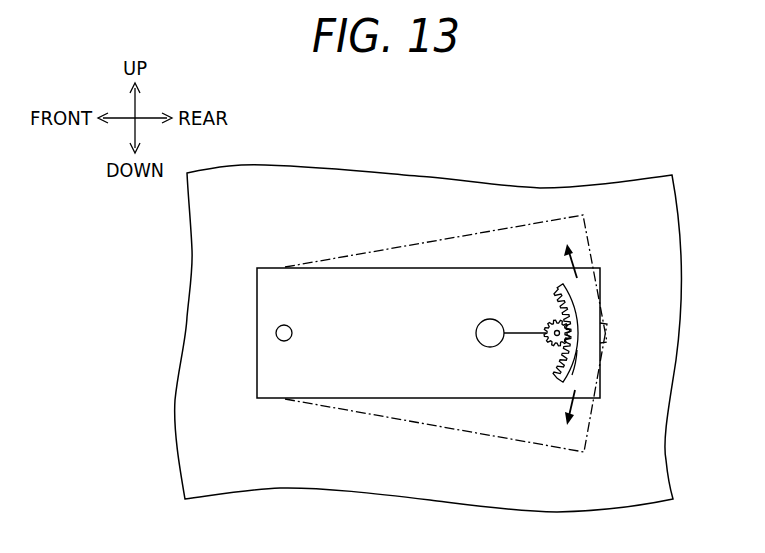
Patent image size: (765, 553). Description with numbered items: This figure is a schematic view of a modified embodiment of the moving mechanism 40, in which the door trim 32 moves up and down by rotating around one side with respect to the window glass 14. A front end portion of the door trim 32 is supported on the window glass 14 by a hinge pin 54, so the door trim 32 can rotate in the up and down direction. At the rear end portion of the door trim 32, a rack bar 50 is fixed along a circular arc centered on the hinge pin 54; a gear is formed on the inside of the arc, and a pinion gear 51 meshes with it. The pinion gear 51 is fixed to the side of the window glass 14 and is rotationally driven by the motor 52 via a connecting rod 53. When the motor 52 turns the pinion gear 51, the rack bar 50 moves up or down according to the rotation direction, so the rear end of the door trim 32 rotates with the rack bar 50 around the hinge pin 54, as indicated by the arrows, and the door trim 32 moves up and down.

The window glass 14 is at (520, 203).
The door trim 32 is at (330, 268).
The moving mechanism 40 is at (583, 295).
The rack bar 50 is at (575, 362).
The pinion gear 51 is at (553, 345).
The motor 52 is at (477, 328).
The connecting rod 53 is at (527, 333).
The hinge pin 54 is at (272, 333).